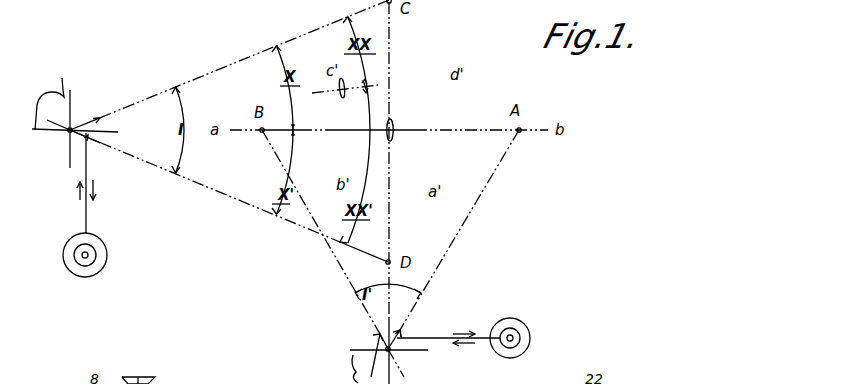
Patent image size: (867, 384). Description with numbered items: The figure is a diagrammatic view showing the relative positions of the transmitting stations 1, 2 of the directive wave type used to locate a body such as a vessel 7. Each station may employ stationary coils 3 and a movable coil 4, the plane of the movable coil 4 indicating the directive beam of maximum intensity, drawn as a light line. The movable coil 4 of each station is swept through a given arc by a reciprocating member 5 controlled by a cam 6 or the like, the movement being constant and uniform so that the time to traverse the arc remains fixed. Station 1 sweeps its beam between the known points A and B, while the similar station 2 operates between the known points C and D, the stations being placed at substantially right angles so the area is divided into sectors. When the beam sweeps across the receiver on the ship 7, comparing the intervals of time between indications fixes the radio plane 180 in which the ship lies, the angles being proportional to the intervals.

The transmitting station 1 is at (381, 338).
The transmitting station 2 is at (68, 132).
The stationary coils 3 is at (196, 224).
The movable coil 4 is at (88, 137).
The reciprocating member 5 is at (88, 220).
The cam 6 is at (100, 254).
The vessel 7 is at (396, 124).
The radio plane 180 is at (378, 82).